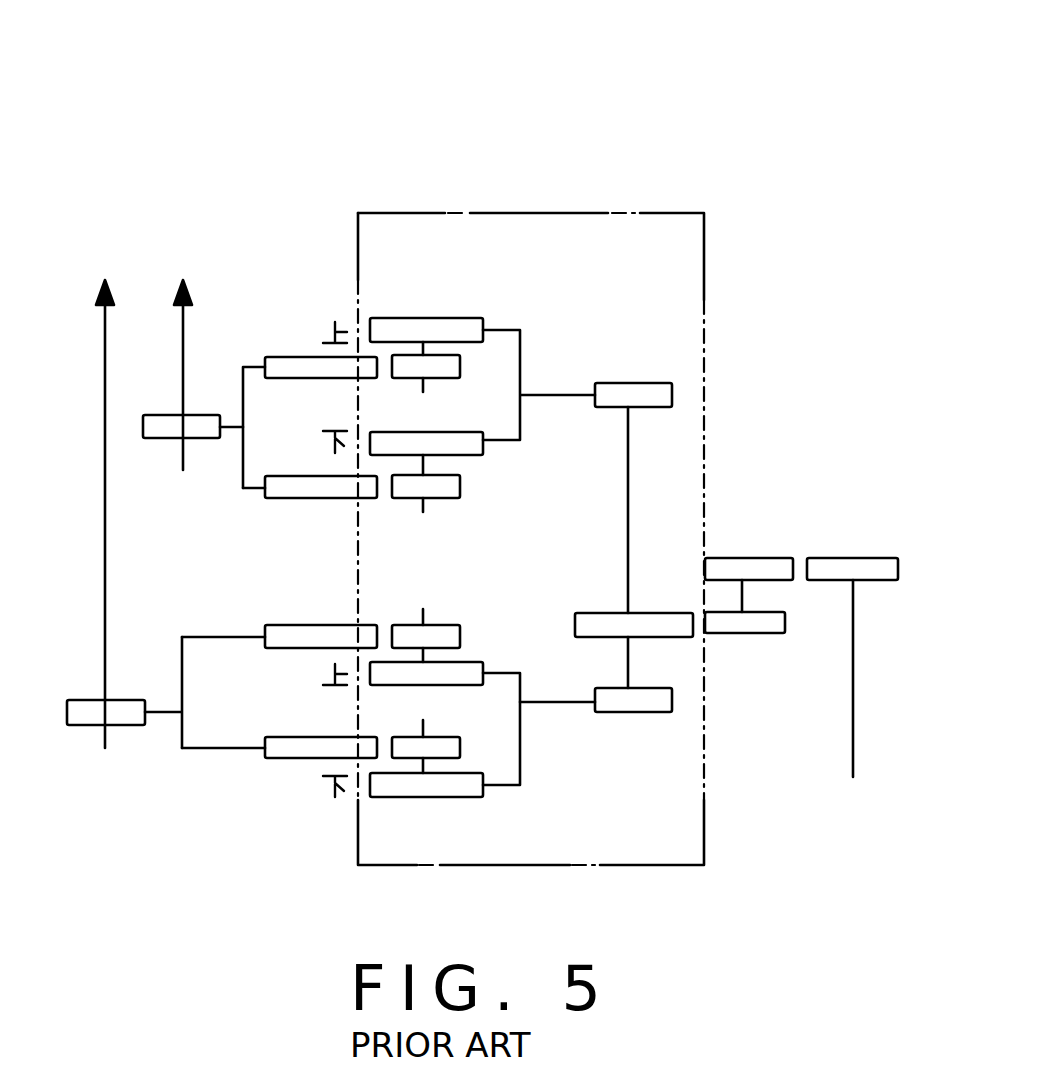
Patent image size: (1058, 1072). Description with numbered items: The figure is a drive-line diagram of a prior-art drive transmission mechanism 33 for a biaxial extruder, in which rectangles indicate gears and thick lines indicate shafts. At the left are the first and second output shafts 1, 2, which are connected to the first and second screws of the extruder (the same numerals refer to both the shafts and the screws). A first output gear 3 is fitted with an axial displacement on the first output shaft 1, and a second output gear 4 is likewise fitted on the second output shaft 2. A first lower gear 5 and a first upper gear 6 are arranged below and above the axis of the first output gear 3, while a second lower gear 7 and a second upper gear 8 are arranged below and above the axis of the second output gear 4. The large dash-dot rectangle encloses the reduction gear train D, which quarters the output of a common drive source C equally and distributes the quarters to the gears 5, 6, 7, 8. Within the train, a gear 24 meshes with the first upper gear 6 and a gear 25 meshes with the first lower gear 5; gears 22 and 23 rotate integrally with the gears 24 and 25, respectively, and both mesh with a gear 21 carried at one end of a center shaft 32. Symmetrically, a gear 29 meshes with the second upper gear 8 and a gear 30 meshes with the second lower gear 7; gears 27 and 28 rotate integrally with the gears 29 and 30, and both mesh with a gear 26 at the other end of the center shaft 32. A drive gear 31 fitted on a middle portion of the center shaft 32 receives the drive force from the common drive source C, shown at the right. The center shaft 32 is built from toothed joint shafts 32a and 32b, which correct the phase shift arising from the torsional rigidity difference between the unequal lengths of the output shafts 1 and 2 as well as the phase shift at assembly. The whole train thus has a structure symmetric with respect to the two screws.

The first output shaft 1 is at (184, 325).
The second output shaft 2 is at (105, 327).
The first output gear 3 is at (211, 420).
The second output gear 4 is at (75, 705).
The first lower gear 5 is at (293, 484).
The first upper gear 6 is at (291, 362).
The second lower gear 7 is at (286, 750).
The second upper gear 8 is at (281, 630).
The gear 21 is at (632, 392).
The gear 22 is at (427, 318).
The gear 23 is at (407, 436).
The gear 24 is at (442, 370).
The gear 25 is at (408, 490).
The gear 26 is at (650, 706).
The gear 27 is at (416, 676).
The gear 28 is at (478, 790).
The gear 29 is at (410, 629).
The gear 30 is at (448, 743).
The drive gear 31 is at (657, 622).
The center shaft 32 is at (522, 502).
The toothed joint shaft 32a is at (628, 512).
The toothed joint shaft 32b is at (628, 653).
The drive transmission mechanism 33 is at (400, 118).
The common drive source C is at (838, 558).
The reduction gear train D is at (645, 213).